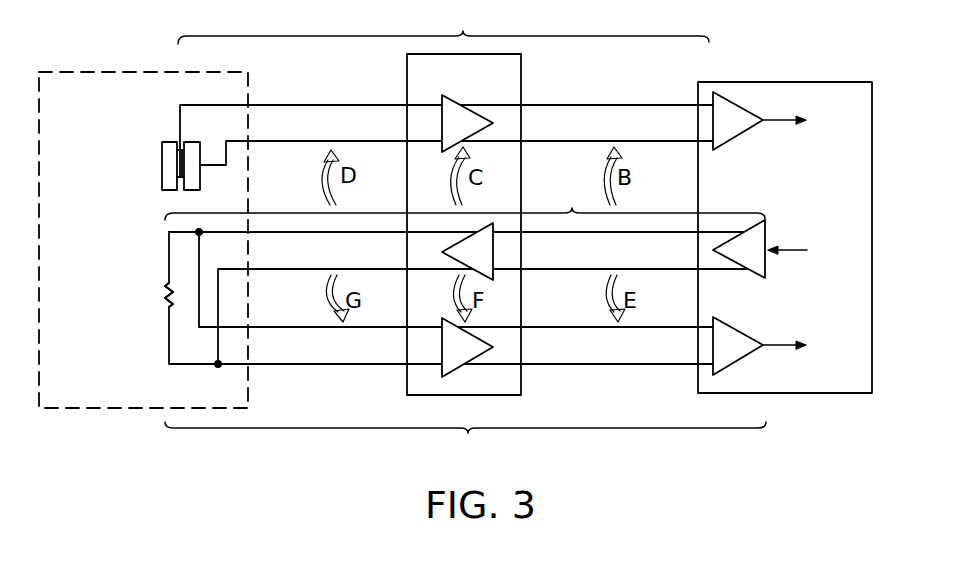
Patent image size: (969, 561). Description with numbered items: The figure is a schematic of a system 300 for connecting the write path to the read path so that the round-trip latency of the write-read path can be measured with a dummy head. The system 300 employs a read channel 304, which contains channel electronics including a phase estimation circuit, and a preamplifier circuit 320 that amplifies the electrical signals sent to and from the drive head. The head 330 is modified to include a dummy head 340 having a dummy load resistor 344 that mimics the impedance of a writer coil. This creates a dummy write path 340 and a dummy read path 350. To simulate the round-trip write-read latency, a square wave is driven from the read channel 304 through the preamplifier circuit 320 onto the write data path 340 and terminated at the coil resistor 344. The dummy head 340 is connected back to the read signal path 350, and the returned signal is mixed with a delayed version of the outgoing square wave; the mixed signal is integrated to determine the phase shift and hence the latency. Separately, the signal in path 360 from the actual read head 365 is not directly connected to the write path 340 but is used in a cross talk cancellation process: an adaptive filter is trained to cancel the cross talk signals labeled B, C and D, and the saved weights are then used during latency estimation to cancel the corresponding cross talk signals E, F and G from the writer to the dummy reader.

The system 300 is at (789, 473).
The read channel 304 is at (827, 393).
The preamplifier circuit 320 is at (521, 395).
The head 330 is at (118, 409).
The dummy head 340 is at (148, 325).
The dummy load resistor 344 is at (167, 282).
The dummy read path 350 is at (465, 443).
The signal path 360 is at (443, 24).
The read head 365 is at (162, 142).